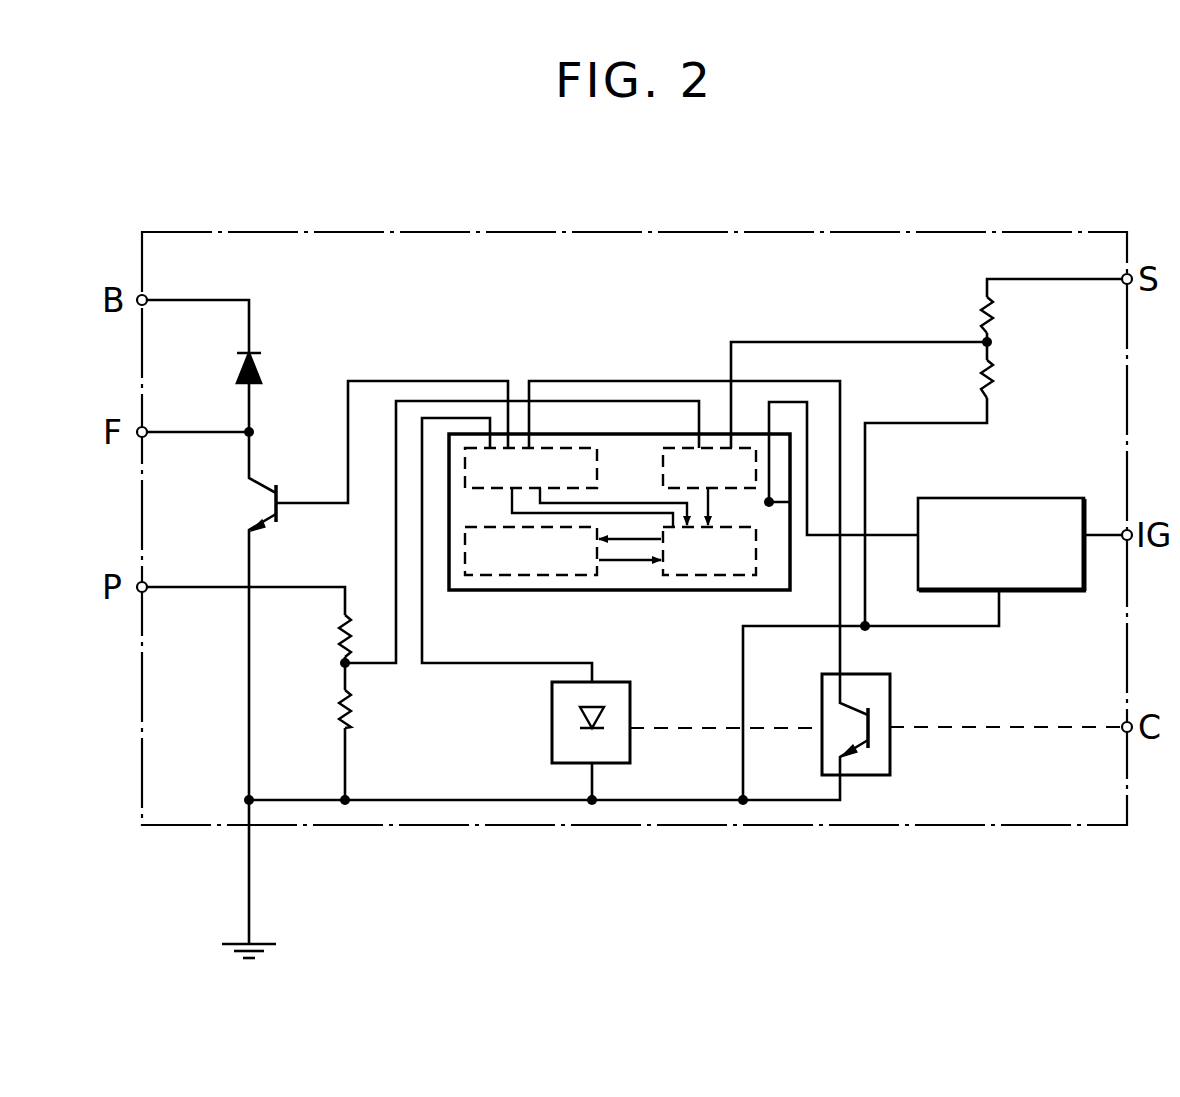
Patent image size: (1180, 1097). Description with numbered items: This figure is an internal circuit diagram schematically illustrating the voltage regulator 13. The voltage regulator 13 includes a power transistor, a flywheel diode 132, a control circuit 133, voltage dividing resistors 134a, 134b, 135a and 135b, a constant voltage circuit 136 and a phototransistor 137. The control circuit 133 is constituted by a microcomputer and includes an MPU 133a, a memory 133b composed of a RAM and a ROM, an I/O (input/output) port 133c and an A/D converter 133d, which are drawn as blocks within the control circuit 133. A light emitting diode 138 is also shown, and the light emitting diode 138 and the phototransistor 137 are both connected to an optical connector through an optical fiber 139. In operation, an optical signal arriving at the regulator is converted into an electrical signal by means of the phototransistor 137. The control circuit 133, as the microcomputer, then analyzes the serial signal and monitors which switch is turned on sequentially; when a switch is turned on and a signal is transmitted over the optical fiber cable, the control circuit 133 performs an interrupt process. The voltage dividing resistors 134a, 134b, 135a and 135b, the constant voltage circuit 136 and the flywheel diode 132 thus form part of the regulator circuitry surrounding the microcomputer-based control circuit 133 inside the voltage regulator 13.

The voltage regulator 13 is at (725, 828).
The flywheel diode 132 is at (263, 377).
The control circuit 133 is at (619, 505).
The MPU 133a is at (691, 575).
The memory 133b is at (490, 575).
The I/O port 133c is at (557, 448).
The A/D converter 133d is at (670, 448).
The voltage dividing resistor 134a is at (340, 627).
The voltage dividing resistor 134b is at (350, 700).
The voltage dividing resistor 135a is at (990, 316).
The voltage dividing resistor 135b is at (990, 372).
The constant voltage circuit 136 is at (1033, 590).
The phototransistor 137 is at (890, 752).
The light emitting diode 138 is at (552, 717).
The optical fiber 139 is at (968, 727).